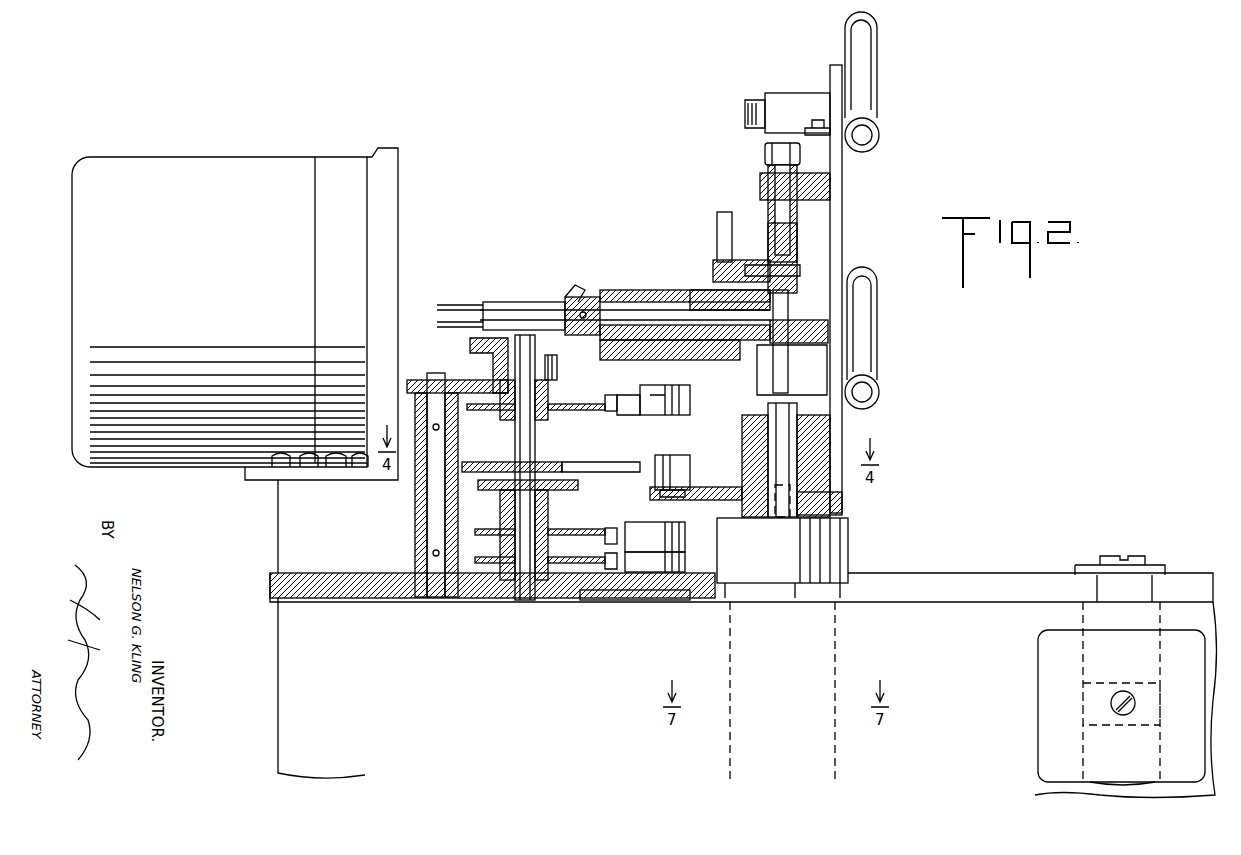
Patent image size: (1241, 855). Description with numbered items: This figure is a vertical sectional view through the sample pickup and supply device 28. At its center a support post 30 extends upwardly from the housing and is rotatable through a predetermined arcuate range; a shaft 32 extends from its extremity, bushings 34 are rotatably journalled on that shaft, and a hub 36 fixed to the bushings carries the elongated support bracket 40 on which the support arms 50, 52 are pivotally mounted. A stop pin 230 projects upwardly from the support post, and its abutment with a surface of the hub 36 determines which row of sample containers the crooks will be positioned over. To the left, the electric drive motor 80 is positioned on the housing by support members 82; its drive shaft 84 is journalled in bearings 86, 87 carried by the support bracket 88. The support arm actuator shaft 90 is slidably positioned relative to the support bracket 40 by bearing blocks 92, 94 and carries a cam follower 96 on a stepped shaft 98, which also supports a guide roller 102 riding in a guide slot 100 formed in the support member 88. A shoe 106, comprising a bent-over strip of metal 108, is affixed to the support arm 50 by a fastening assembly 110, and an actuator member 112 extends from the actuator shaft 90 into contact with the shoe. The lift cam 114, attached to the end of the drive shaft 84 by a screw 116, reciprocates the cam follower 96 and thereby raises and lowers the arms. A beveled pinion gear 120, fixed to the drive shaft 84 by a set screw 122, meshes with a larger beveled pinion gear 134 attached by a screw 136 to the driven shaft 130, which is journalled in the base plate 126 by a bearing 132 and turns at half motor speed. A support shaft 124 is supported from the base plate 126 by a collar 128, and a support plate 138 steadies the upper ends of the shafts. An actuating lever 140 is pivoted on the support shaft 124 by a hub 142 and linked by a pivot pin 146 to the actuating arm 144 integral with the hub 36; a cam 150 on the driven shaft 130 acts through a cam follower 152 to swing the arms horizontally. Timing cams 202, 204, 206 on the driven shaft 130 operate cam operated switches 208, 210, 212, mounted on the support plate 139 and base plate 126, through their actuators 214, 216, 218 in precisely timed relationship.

The sample pickup and supply device 28 is at (914, 207).
The support post 30 is at (848, 540).
The shaft 32 is at (760, 450).
The bushings 34 is at (815, 502).
The hub 36 is at (820, 438).
The support bracket 40 is at (845, 217).
The support arm 50 is at (880, 140).
The support arm 52 is at (880, 390).
The electric drive motor 80 is at (223, 166).
The support members 82 is at (278, 531).
The drive shaft 84 is at (535, 302).
The bearing 86 is at (592, 297).
The bearing 87 is at (710, 290).
The support bracket 88 is at (645, 290).
The support arm actuator shaft 90 is at (797, 240).
The bearing block 92 is at (834, 182).
The bearing block 94 is at (800, 320).
The cam follower 96 is at (760, 252).
The stepped shaft 98 is at (800, 270).
The guide slot 100 is at (725, 212).
The guide roller 102 is at (718, 260).
The shoe 106 is at (780, 95).
The bent-over strip of metal 108 is at (880, 128).
The fastening assembly 110 is at (812, 120).
The actuator member 112 is at (762, 147).
The lift cam 114 is at (780, 384).
The screw 116 is at (670, 350).
The beveled pinion gear 120 is at (578, 288).
The set screw 122 is at (575, 300).
The support shaft 124 is at (430, 507).
The base plate 126 is at (605, 600).
The collar 128 is at (420, 555).
The driven shaft 130 is at (515, 449).
The bearing 132 is at (522, 600).
The beveled pinion gear 134 is at (478, 338).
The screw 136 is at (555, 367).
The support plate 138 is at (480, 380).
The support plate 139 is at (410, 380).
The actuating lever 140 is at (578, 462).
The hub 142 is at (415, 410).
The actuating arm 144 is at (710, 487).
The pivot pin 146 is at (682, 462).
The cam 150 is at (540, 500).
The cam follower 152 is at (538, 462).
The timing cam 202 is at (472, 410).
The timing cam 204 is at (480, 529).
The timing cam 206 is at (474, 556).
The cam operated switch 208 is at (670, 392).
The cam operated switch 210 is at (676, 530).
The cam operated switch 212 is at (676, 556).
The actuator 214 is at (608, 415).
The actuator 216 is at (608, 528).
The actuator 218 is at (560, 600).
The stop pin 230 is at (782, 517).